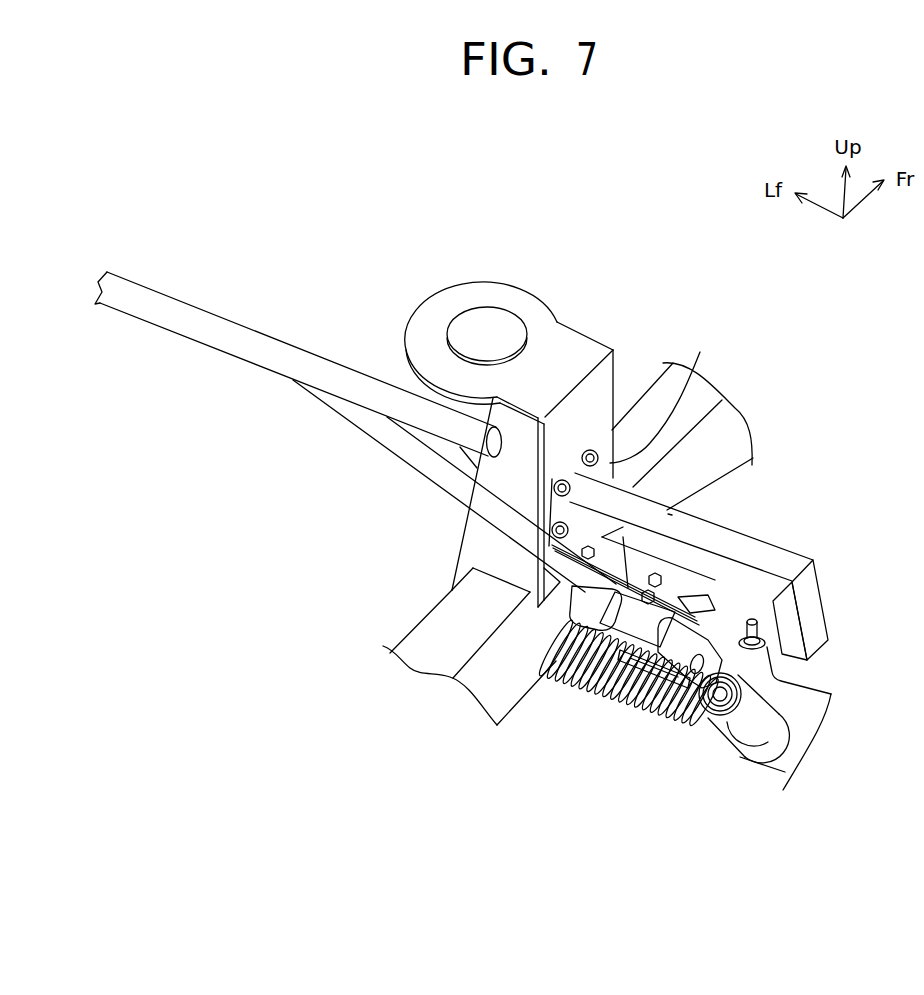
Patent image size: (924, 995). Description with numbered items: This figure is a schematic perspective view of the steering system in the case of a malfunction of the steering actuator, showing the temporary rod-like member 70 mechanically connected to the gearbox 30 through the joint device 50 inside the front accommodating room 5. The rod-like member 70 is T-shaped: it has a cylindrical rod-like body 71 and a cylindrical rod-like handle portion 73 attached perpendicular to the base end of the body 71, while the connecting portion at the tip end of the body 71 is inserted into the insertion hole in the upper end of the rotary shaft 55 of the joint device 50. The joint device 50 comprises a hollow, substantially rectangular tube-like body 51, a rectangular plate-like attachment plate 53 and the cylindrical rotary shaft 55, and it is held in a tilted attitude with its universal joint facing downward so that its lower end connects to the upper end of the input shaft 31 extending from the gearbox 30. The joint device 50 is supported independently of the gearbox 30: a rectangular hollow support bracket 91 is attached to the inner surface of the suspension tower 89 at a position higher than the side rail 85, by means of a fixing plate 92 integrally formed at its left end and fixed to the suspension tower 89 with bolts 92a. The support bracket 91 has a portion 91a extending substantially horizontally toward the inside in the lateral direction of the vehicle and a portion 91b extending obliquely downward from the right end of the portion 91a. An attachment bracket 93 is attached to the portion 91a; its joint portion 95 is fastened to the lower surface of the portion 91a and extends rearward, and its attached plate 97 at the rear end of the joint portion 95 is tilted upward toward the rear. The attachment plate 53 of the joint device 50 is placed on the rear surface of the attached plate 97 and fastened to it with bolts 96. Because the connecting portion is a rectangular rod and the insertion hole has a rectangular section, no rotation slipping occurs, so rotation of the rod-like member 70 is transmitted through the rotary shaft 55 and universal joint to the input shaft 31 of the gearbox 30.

The front accommodating room 5 is at (822, 339).
The gearbox 30 is at (777, 753).
The input shaft 31 is at (702, 720).
The joint device 50 is at (631, 700).
The body 51 is at (607, 683).
The attachment plate 53 is at (688, 700).
The rotary shaft 55 is at (567, 623).
The rod-like member 70 is at (434, 486).
The body 71 is at (373, 432).
The handle portion 73 is at (212, 328).
The side rail 85 is at (432, 636).
The suspension tower 89 is at (590, 387).
The support bracket 91 is at (742, 504).
The portion extending substantially horizontally 91a is at (668, 514).
The portion extending obliquely downward 91b is at (818, 630).
The fixing plate 92 is at (593, 450).
The bolts 92a is at (700, 352).
The attachment bracket 93 is at (790, 573).
The joint portion 95 is at (820, 576).
The bolts 96 is at (666, 577).
The attached plate 97 is at (727, 597).